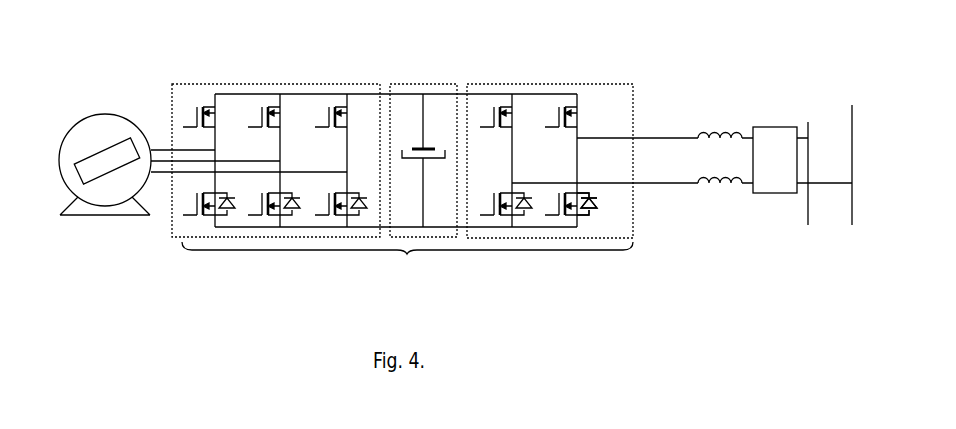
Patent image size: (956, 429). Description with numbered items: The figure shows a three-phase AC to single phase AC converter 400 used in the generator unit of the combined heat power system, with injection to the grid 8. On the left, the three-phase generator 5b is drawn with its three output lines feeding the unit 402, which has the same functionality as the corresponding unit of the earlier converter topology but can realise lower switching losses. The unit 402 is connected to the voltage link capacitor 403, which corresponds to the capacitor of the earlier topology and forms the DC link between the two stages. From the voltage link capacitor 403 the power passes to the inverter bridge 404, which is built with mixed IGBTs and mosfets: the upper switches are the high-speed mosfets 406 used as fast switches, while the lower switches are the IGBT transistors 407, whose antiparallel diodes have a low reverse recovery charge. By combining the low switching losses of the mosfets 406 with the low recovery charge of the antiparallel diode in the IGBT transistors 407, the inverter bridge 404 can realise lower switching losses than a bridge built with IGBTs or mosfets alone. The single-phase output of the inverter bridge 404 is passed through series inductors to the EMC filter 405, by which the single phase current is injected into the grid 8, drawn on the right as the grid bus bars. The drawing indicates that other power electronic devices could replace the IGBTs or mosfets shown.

The generator 5b is at (105, 152).
The three-phase AC to single phase AC converter 400 is at (407, 268).
The unit 402 is at (276, 143).
The voltage link capacitor 403 is at (423, 143).
The inverter bridge 404 is at (610, 153).
The EMC filter 405 is at (775, 160).
The mosfets 406 is at (588, 103).
The IGBT transistors 407 is at (603, 202).
The grid 8 is at (824, 147).